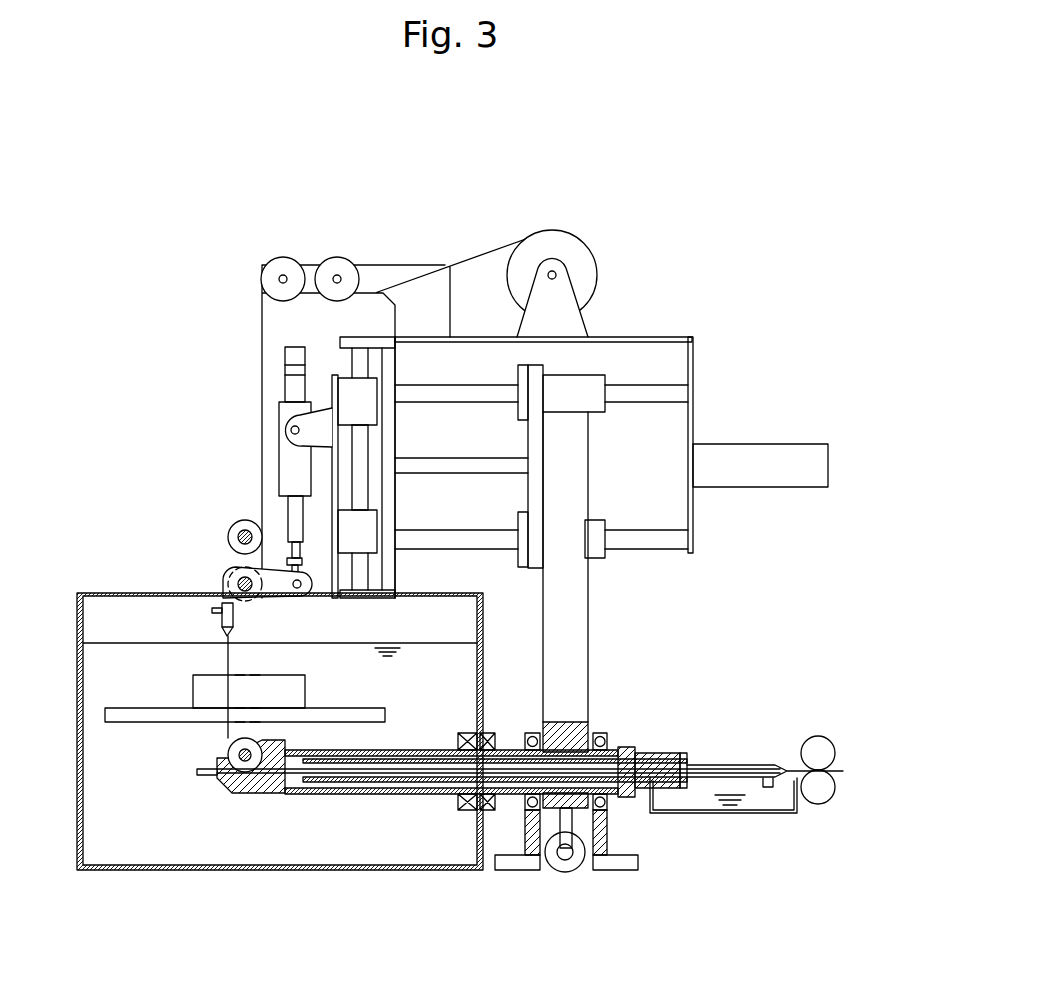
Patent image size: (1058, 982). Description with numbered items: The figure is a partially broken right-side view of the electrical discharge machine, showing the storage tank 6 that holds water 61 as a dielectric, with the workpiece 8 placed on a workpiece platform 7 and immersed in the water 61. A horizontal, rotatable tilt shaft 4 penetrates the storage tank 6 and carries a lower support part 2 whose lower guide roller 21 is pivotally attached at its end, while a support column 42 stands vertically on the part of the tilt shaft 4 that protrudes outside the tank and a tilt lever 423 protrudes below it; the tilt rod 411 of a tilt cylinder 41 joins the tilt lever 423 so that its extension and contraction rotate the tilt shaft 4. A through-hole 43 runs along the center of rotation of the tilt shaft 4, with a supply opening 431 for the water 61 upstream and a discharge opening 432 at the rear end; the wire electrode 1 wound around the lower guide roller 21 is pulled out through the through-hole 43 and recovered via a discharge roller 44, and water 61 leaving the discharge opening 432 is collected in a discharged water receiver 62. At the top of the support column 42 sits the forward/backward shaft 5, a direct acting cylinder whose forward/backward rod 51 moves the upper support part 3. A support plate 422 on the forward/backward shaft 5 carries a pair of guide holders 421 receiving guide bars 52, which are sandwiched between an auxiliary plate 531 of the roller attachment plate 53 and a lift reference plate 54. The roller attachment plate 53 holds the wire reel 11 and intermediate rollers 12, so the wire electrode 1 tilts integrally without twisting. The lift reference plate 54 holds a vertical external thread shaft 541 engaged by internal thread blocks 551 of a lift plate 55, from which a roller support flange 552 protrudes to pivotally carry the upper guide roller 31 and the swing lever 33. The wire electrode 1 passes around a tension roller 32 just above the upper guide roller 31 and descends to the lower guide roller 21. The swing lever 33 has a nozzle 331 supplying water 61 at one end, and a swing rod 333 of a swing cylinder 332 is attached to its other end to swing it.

The wire electrode 1 is at (473, 252).
The wire reel 11 is at (590, 258).
The intermediate rollers 12 is at (279, 268).
The lower support part 2 is at (211, 791).
The lower guide roller 21 is at (240, 741).
The upper support part 3 is at (221, 591).
The upper guide roller 31 is at (240, 603).
The tension roller 32 is at (240, 522).
The swing lever 33 is at (222, 586).
The nozzle 331 is at (213, 620).
The swing cylinder 332 is at (285, 455).
The swing rod 333 is at (270, 596).
The tilt shaft 4 is at (386, 800).
The tilt cylinder 41 is at (580, 858).
The tilt rod 411 is at (555, 862).
The support column 42 is at (550, 655).
The guide holders 421 is at (592, 378).
The support plate 422 is at (545, 466).
The tilt lever 423 is at (608, 843).
The through-hole 43 is at (325, 784).
The supply opening 431 is at (205, 779).
The discharge opening 432 is at (767, 790).
The discharge roller 44 is at (818, 738).
The forward/backward shaft 5 is at (748, 442).
The forward/backward rod 51 is at (458, 472).
The guide bars 52 is at (440, 393).
The roller attachment plate 53 is at (652, 336).
The auxiliary plate 531 is at (698, 348).
The lift reference plate 54 is at (395, 428).
The external thread shaft 541 is at (362, 483).
The lift plate 55 is at (345, 392).
The internal thread blocks 551 is at (332, 392).
The roller support flange 552 is at (318, 596).
The storage tank 6 is at (360, 878).
The water 61 is at (200, 610).
The discharged water receiver 62 is at (796, 810).
The workpiece platform 7 is at (98, 717).
The workpiece 8 is at (185, 688).